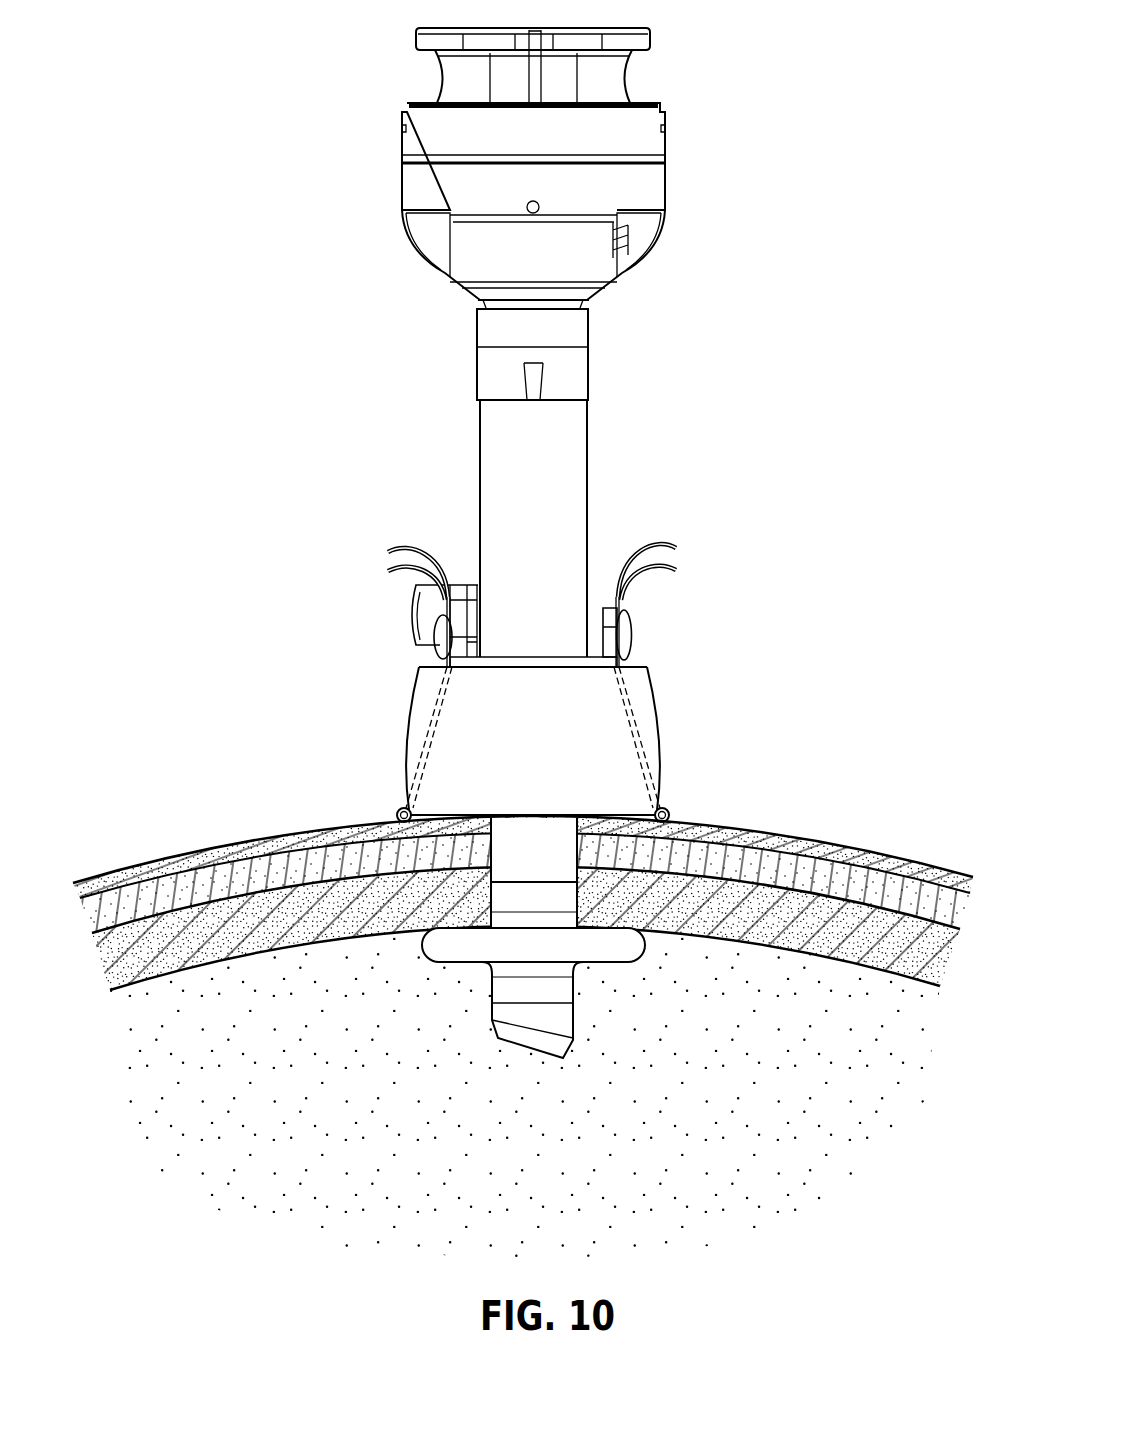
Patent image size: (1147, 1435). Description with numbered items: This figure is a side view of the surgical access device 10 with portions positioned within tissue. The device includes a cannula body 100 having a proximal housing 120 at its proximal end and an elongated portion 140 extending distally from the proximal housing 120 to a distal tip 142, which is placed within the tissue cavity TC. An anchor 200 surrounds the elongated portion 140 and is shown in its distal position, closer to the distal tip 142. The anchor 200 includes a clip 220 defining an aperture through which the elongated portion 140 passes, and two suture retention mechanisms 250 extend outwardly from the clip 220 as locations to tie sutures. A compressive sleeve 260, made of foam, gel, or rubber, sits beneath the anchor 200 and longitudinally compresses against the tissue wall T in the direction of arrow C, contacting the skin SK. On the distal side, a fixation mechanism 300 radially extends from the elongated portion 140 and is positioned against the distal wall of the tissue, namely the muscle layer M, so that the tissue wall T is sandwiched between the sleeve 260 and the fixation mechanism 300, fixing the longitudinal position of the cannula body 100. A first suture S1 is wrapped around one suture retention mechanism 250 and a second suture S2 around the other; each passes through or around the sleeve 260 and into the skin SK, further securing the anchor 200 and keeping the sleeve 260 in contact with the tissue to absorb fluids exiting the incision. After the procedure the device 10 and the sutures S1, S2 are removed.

The surgical access device 10 is at (336, 52).
The cannula body 100 is at (392, 379).
The proximal housing 120 is at (650, 187).
The elongated portion 140 is at (543, 440).
The distal tip 142 is at (565, 1058).
The anchor 200 is at (390, 592).
The clip 220 is at (557, 657).
The suture retention mechanism 250 is at (438, 637).
The sleeve 260 is at (564, 657).
The fixation mechanism 300 is at (450, 945).
The first suture S1 is at (408, 546).
The second suture S2 is at (672, 547).
The arrow indicating longitudinal compression C is at (390, 749).
The skin SK is at (113, 881).
The tissue wall T is at (523, 1021).
The muscle layer M is at (126, 955).
The tissue cavity TC is at (230, 1137).